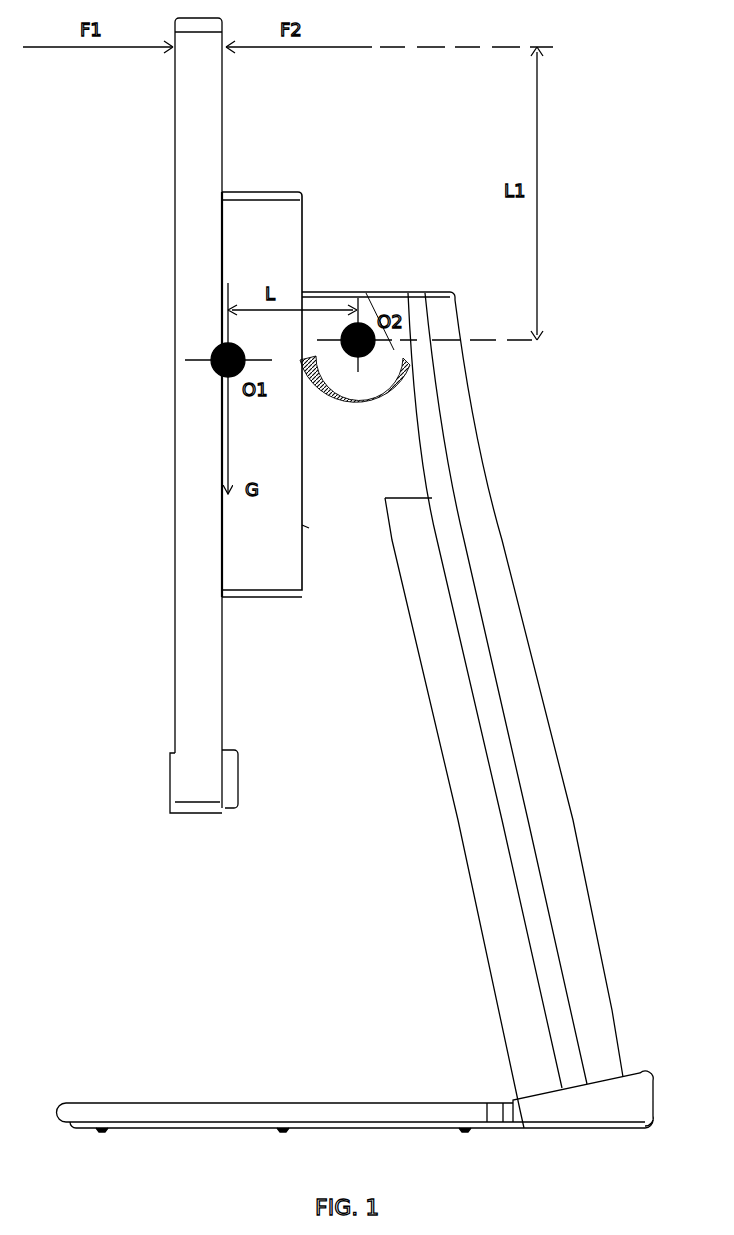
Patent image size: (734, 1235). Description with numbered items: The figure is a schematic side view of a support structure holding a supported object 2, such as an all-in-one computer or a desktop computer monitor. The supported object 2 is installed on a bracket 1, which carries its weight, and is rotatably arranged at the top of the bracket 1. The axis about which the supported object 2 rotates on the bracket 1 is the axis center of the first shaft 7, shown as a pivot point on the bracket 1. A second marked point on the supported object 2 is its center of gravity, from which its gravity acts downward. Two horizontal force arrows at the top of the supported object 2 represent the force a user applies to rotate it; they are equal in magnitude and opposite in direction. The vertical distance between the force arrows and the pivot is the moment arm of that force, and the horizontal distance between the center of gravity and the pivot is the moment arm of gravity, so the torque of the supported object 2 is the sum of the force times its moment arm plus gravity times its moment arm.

The bracket 1 is at (543, 647).
The supported object 2 is at (172, 442).
The first shaft 7 is at (390, 358).